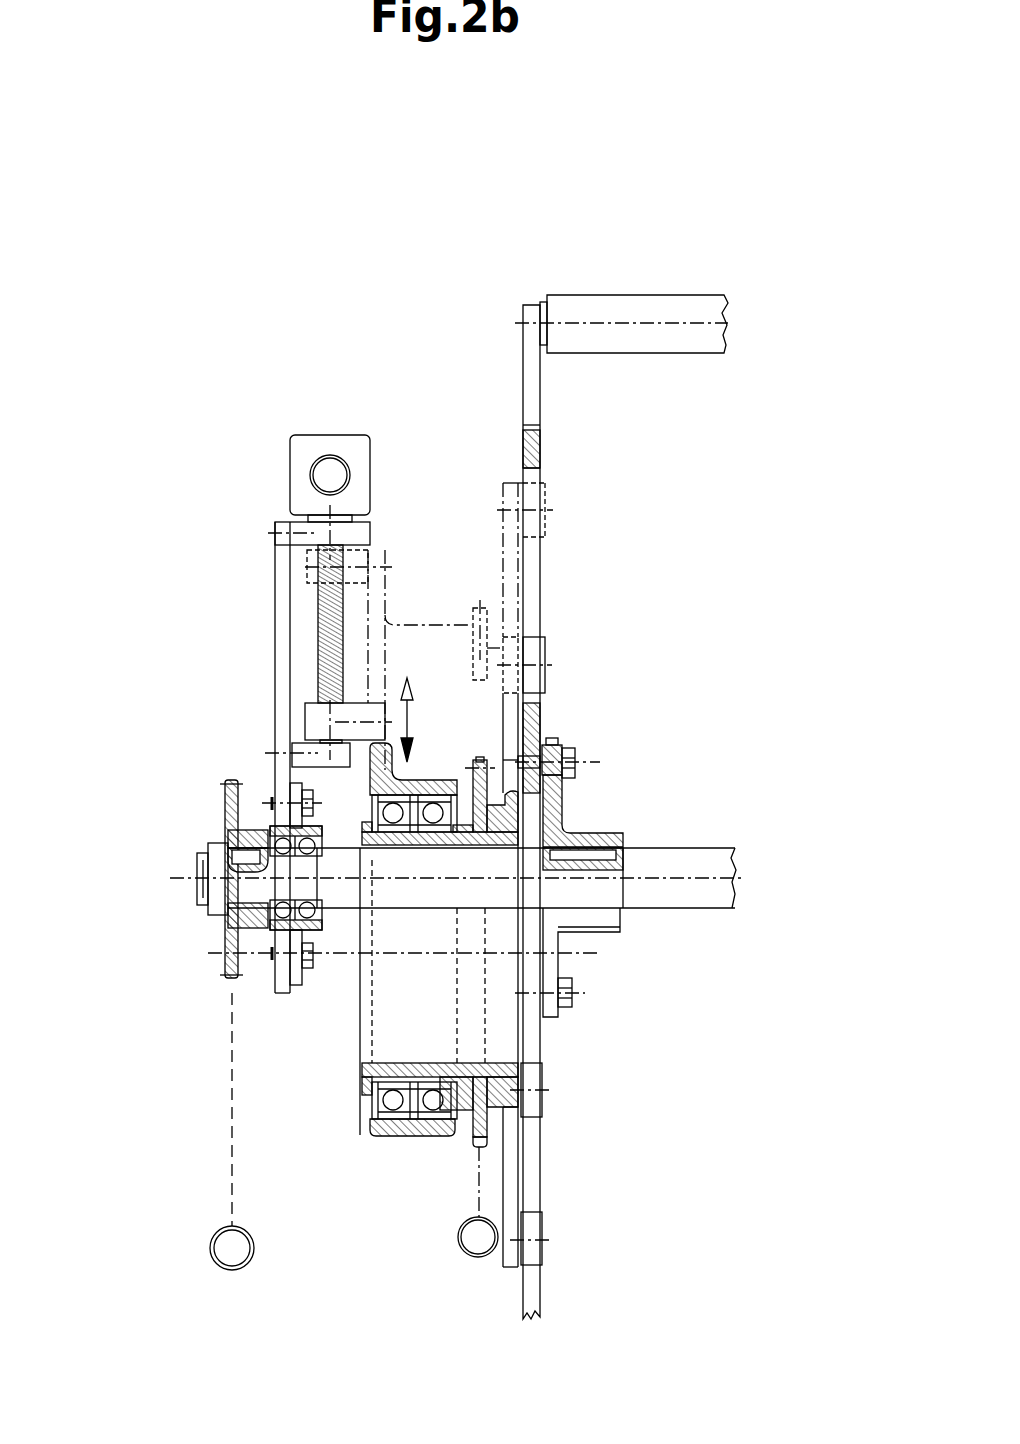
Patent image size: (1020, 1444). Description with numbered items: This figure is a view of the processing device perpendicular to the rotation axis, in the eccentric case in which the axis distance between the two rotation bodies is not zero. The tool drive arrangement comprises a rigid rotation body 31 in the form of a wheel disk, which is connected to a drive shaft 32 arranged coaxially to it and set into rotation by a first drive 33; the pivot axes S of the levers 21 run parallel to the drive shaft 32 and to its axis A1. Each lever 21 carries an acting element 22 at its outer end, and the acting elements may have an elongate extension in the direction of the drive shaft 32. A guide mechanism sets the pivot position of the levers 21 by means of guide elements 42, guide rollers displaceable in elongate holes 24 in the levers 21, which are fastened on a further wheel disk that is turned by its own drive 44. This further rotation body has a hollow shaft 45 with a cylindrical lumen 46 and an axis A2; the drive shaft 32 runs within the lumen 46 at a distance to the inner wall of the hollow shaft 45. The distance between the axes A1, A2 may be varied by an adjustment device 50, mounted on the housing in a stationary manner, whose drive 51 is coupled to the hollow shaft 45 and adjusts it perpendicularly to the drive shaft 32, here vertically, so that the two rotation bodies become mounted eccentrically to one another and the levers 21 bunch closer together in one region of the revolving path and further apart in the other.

The acting element 22 is at (655, 312).
The lever 21 is at (533, 390).
The elongate hole 24 is at (535, 555).
The guide element 42 is at (545, 652).
The pivot axis S is at (590, 762).
The rigid rotation body 31 is at (580, 837).
The drive shaft 32 is at (692, 862).
The axis of the drive shaft A1 is at (187, 878).
The axis of the hollow shaft A2 is at (208, 953).
The cylindrical lumen 46 is at (393, 1028).
The hollow shaft 45 is at (368, 1073).
The first drive 33 is at (218, 1249).
The drive 44 is at (460, 1248).
The adjustment device 50 is at (346, 551).
The drive 51 is at (300, 465).